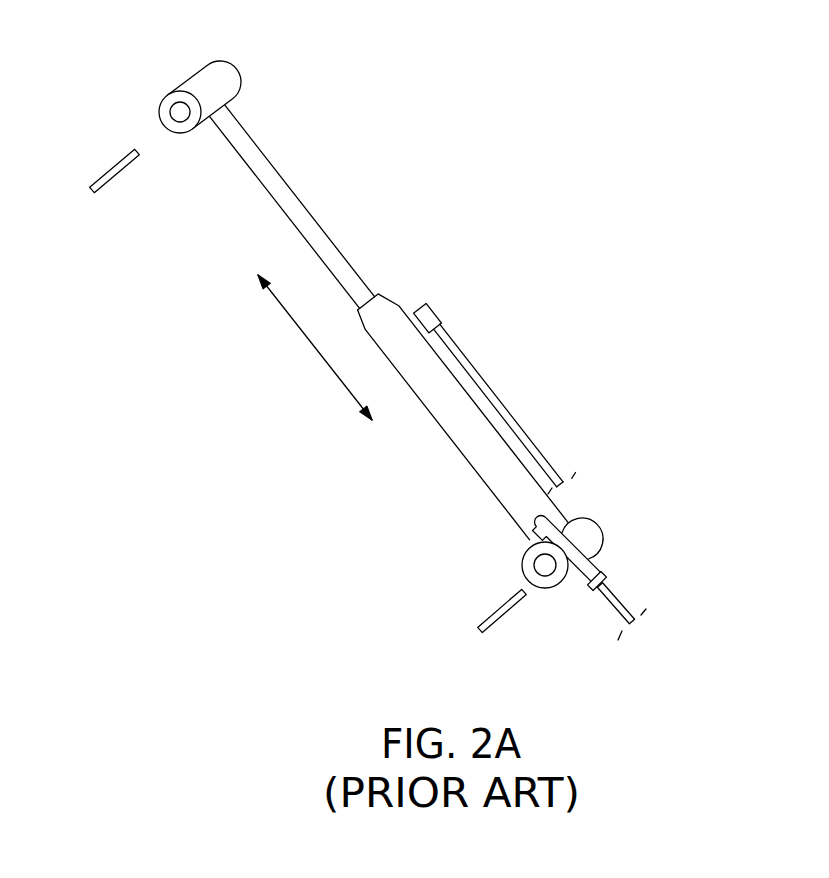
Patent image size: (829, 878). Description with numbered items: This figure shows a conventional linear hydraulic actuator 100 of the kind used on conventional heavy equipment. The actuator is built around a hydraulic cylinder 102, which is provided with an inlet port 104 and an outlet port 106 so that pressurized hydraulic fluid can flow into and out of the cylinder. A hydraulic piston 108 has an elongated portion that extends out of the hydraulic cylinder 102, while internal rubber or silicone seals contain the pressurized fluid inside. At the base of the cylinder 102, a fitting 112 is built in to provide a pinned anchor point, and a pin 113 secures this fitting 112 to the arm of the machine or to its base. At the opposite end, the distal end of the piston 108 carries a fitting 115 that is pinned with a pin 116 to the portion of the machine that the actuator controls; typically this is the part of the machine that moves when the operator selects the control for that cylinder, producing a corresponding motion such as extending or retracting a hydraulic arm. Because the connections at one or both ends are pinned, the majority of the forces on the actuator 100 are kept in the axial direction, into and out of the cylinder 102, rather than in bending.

The hydraulic actuator 100 is at (492, 224).
The hydraulic cylinder 102 is at (478, 460).
The inlet port 104 is at (600, 571).
The outlet port 106 is at (455, 343).
The hydraulic piston 108 is at (265, 188).
The fitting 112 is at (600, 527).
The pin 113 is at (479, 637).
The fitting 115 is at (237, 71).
The pin 116 is at (91, 195).